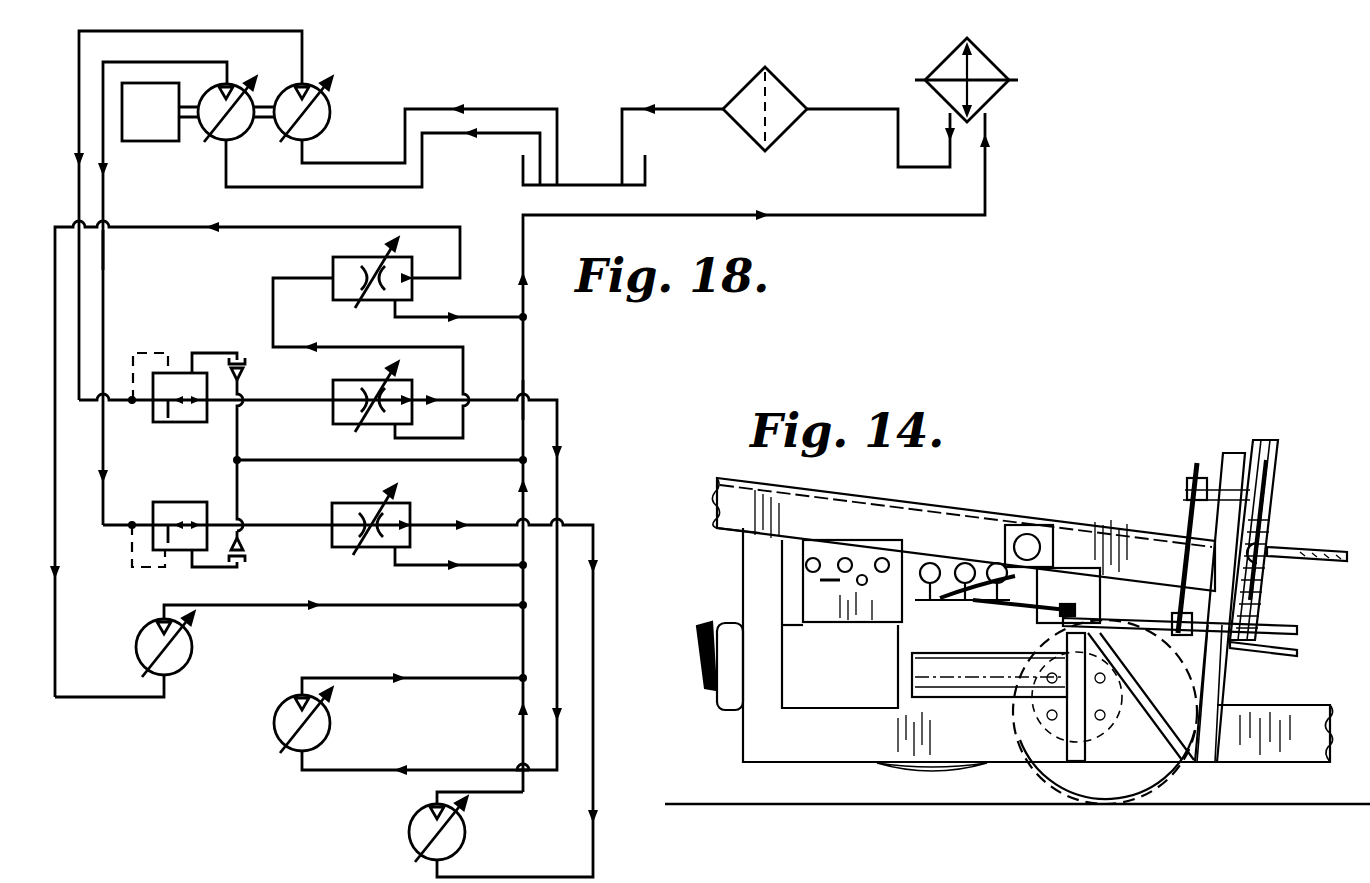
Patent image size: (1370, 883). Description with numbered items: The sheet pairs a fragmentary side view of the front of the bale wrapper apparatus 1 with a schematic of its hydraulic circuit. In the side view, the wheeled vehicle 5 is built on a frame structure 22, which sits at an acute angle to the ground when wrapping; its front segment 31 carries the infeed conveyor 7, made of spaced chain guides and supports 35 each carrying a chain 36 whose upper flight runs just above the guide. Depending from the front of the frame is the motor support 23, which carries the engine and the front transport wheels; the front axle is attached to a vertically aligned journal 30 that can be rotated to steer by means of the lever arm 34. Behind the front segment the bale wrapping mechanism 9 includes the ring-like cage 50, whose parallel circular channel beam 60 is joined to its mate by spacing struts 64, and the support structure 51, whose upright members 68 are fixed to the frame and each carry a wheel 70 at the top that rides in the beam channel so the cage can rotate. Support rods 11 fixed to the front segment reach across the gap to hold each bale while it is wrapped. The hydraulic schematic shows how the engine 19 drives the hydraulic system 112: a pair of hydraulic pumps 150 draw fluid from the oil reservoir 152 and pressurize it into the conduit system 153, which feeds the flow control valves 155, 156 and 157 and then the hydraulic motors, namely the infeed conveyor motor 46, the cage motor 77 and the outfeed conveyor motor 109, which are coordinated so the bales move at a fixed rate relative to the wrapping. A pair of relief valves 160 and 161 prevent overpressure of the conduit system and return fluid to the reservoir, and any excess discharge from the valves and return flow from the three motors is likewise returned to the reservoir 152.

In FIG. 18, the hydraulic pumps 150 is at (232, 82).
In FIG. 18, the combustion engine 19 is at (132, 141).
In FIG. 18, the oil reservoir 152 is at (614, 183).
In FIG. 18, the conduit system 153 is at (104, 283).
In FIG. 18, the flow control valve 155 is at (401, 265).
In FIG. 18, the flow control valve 156 is at (398, 387).
In FIG. 18, the flow control valve 157 is at (399, 508).
In FIG. 18, the relief valve 160 is at (198, 425).
In FIG. 18, the relief valve 161 is at (155, 504).
In FIG. 18, the hydraulic system 112 is at (568, 373).
In FIG. 14, the hydraulic system 112 is at (930, 555).
In FIG. 18, the hydraulic motor 46 is at (194, 655).
In FIG. 14, the hydraulic motor 46 is at (1025, 536).
In FIG. 18, the cage motor 77 is at (331, 728).
In FIG. 18, the hydraulic motor 109 is at (465, 832).
In FIG. 14, the bale wrapper apparatus 1 is at (1090, 474).
In FIG. 14, the infeed conveyor 7 is at (948, 506).
In FIG. 14, the chain 36 is at (902, 500).
In FIG. 14, the chain guides and supports 35 is at (872, 538).
In FIG. 14, the frame structure 22 is at (740, 531).
In FIG. 14, the front segment 31 is at (756, 586).
In FIG. 14, the lever arm 34 is at (1036, 595).
In FIG. 14, the journal 30 is at (1090, 641).
In FIG. 14, the upright member 68 is at (1241, 456).
In FIG. 14, the support structure 51 is at (1212, 672).
In FIG. 14, the cage 50 is at (1277, 461).
In FIG. 14, the bale wrapping mechanism 9 is at (1272, 491).
In FIG. 14, the wheel 70 is at (1273, 498).
In FIG. 14, the support rods 11 is at (1297, 549).
In FIG. 14, the circular channel beam 60 is at (1259, 612).
In FIG. 14, the spacing struts 64 is at (1297, 653).
In FIG. 14, the wheeled vehicle 5 is at (760, 738).
In FIG. 14, the motor support 23 is at (828, 752).